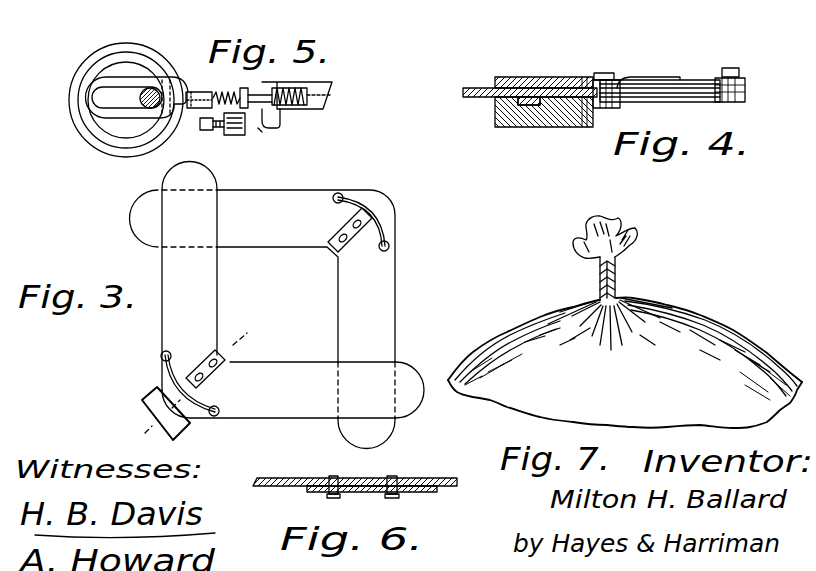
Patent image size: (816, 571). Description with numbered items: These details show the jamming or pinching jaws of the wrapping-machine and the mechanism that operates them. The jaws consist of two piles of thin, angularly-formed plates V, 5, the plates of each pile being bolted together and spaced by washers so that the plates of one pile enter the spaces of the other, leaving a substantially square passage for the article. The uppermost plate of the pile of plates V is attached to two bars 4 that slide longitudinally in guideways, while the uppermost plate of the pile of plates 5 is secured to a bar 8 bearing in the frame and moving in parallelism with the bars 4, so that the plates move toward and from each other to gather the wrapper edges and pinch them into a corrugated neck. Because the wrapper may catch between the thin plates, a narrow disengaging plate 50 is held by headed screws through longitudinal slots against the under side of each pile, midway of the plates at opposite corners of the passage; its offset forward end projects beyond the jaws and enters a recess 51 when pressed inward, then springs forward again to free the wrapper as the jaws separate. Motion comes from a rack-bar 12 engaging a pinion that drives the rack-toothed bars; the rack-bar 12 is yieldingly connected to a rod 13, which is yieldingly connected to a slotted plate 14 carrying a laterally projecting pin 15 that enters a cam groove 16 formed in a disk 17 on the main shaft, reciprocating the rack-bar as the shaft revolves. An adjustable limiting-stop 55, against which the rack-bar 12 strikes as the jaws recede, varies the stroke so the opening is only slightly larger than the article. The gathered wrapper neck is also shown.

In FIG. 4, the bars 4 is at (643, 78).
In FIG. 5, the plates 5 is at (155, 92).
In FIG. 4, the plates 5 is at (685, 102).
In FIG. 3, the plates 5 is at (168, 258).
In FIG. 6, the plates 5 is at (278, 478).
In FIG. 4, the bar 8 is at (470, 88).
In FIG. 3, the bar 8 is at (145, 400).
In FIG. 5, the rack-bar 12 is at (333, 84).
In FIG. 5, the rod 13 is at (258, 121).
In FIG. 5, the slotted plate 14 is at (140, 82).
In FIG. 5, the pin 15 is at (170, 107).
In FIG. 5, the cam groove 16 is at (87, 121).
In FIG. 5, the disk 17 is at (70, 101).
In FIG. 4, the disengaging plate 50 is at (597, 103).
In FIG. 3, the disengaging plate 50 is at (337, 232).
In FIG. 6, the disengaging plate 50 is at (425, 492).
In FIG. 6, the recess 51 is at (420, 478).
In FIG. 5, the limiting-stop 55 is at (230, 136).
In FIG. 4, the plates V is at (694, 80).
In FIG. 3, the plates V is at (272, 195).